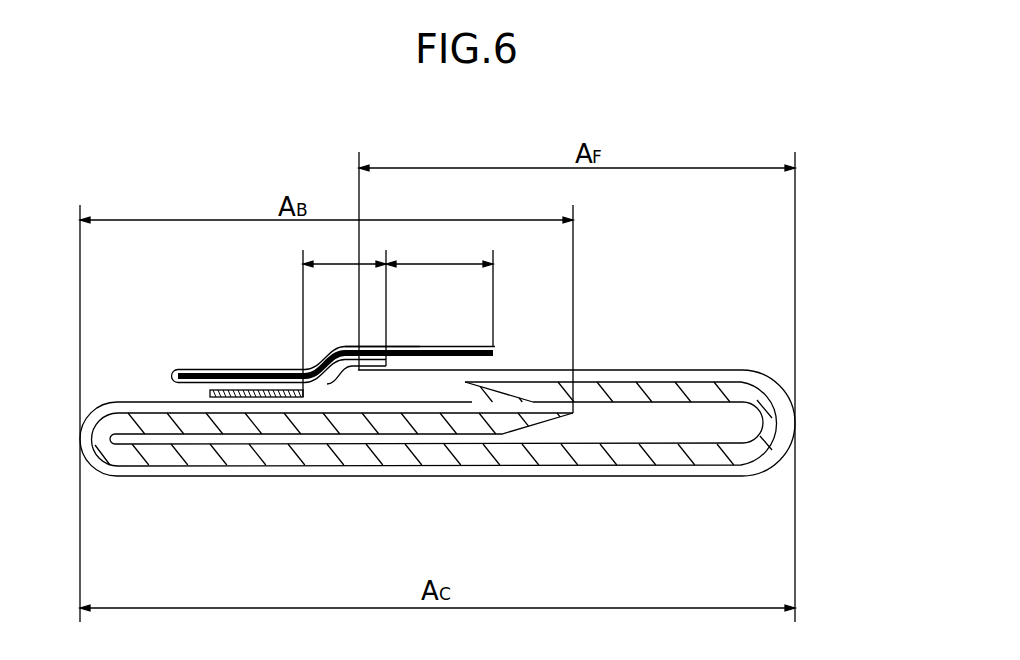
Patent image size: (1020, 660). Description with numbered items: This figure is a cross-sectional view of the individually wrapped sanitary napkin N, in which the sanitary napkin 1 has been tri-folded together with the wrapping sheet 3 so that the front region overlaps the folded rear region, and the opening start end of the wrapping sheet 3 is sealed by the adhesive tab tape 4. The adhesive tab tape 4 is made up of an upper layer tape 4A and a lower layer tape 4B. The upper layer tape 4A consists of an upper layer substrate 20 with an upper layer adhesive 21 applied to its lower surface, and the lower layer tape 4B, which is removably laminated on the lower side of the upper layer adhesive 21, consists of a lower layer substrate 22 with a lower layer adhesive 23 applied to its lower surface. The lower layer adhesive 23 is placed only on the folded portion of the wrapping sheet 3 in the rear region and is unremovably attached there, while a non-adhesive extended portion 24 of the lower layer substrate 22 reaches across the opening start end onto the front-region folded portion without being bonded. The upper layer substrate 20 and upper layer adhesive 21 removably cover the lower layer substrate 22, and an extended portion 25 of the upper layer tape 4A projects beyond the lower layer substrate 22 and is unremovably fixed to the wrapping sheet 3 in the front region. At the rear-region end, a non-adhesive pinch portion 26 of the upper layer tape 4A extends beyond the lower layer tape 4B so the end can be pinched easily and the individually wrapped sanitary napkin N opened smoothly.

The sanitary napkin 1 is at (593, 462).
The wrapping sheet 3 is at (462, 369).
The adhesive tab tape 4 is at (355, 402).
The upper layer tape 4A is at (407, 346).
The lower layer tape 4B is at (247, 458).
The upper layer substrate 20 is at (453, 345).
The upper layer adhesive 21 is at (495, 357).
The lower layer substrate 22 is at (327, 384).
The lower layer adhesive 23 is at (263, 396).
The extended portion 24 is at (344, 315).
The extended portion 25 is at (439, 290).
The pinch portion 26 is at (179, 368).
The individually wrapped sanitary napkin N is at (767, 370).